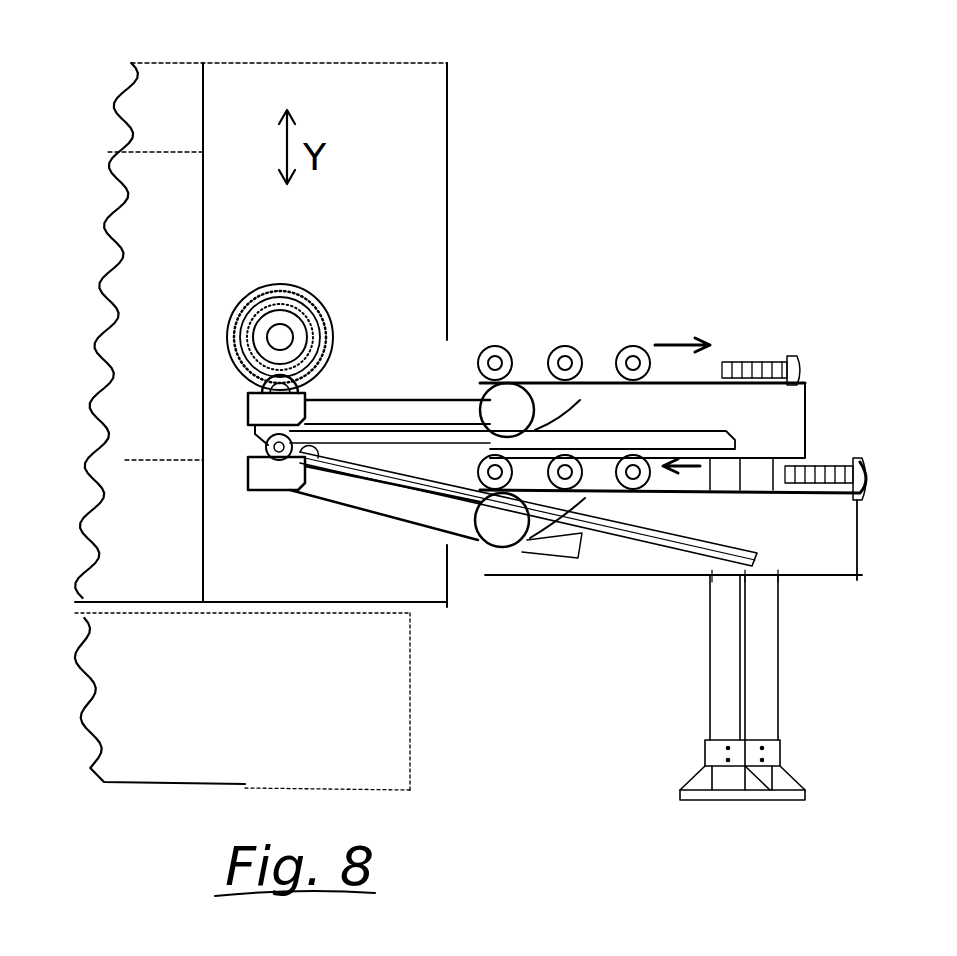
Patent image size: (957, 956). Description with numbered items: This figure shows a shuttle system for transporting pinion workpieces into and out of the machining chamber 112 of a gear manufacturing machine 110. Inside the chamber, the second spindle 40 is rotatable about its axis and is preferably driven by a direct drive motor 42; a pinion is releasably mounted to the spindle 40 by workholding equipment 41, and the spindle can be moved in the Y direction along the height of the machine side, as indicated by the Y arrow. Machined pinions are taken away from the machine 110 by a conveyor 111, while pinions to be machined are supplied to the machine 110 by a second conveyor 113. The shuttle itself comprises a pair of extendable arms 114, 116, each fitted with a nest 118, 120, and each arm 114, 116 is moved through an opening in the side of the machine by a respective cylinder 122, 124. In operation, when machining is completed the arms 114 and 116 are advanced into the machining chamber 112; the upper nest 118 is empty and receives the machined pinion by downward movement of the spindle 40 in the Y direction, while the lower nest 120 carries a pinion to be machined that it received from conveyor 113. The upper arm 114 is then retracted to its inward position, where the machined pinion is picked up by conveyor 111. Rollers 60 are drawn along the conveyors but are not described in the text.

The second spindle 40 is at (307, 327).
The workholding equipment 41 is at (266, 326).
The direct drive motor 42 is at (280, 303).
The rollers 60 is at (505, 355).
The gear manufacturing machine 110 is at (458, 90).
The conveyor 111 is at (788, 422).
The machining chamber 112 is at (398, 360).
The conveyor 113 is at (843, 547).
The upper extendable arm 114 is at (400, 407).
The lower extendable arm 116 is at (367, 500).
The upper nest 118 is at (265, 408).
The lower nest 120 is at (263, 473).
The cylinder 122 is at (438, 445).
The cylinder 124 is at (386, 474).